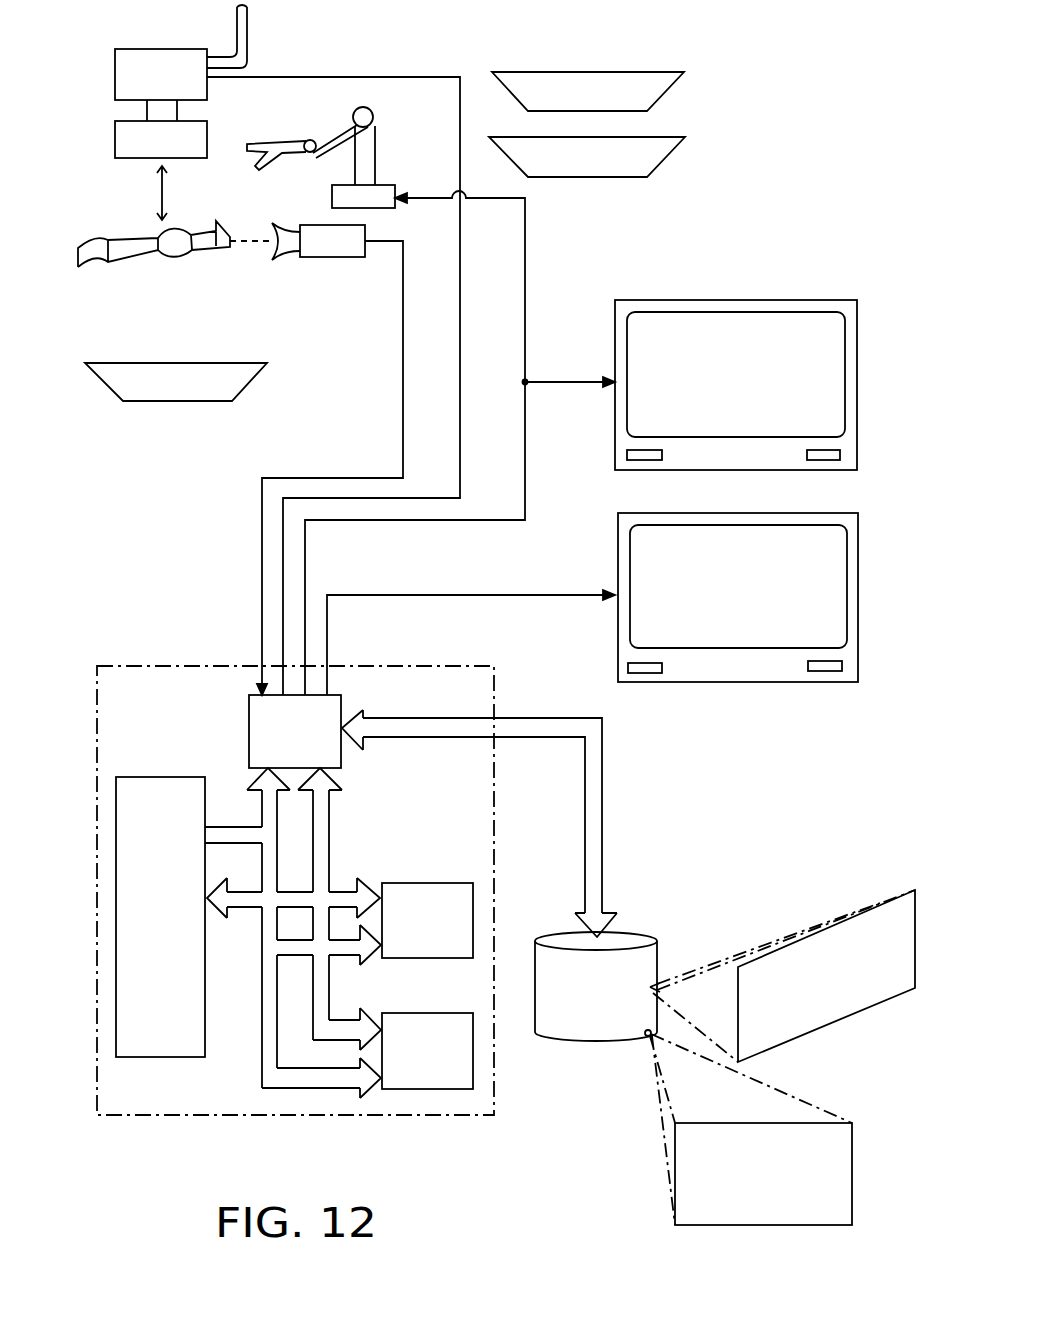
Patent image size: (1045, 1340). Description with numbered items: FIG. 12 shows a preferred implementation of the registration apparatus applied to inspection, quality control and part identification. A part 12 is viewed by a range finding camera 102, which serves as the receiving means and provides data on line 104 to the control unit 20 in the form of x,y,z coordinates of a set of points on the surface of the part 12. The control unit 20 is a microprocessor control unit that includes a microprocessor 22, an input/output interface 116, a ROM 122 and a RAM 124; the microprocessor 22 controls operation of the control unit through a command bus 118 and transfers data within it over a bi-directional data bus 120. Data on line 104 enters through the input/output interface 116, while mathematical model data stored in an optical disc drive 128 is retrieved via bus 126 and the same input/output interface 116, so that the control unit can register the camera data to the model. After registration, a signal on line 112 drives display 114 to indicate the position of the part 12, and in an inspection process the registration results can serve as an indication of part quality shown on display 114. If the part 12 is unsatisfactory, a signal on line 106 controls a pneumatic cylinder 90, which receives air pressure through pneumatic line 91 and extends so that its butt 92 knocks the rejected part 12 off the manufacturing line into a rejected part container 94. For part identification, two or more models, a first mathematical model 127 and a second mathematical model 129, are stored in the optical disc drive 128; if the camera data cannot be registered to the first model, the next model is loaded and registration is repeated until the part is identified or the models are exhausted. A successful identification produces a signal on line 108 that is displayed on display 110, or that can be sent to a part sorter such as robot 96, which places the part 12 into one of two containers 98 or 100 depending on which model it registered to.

The part 12 is at (133, 255).
The control unit 20 is at (257, 1115).
The microprocessor 22 is at (148, 1043).
The pneumatic cylinder 90 is at (153, 57).
The pneumatic line 91 is at (245, 37).
The butt 92 is at (120, 140).
The rejected part container 94 is at (201, 392).
The robot 96 is at (370, 160).
The container 98 is at (657, 87).
The container 100 is at (635, 162).
The range finding camera 102 is at (341, 251).
The line 104 is at (403, 316).
The line 106 is at (388, 75).
The line 108 is at (525, 482).
The display 110 is at (730, 303).
The line 112 is at (405, 595).
The display 114 is at (788, 670).
The input/output interface 116 is at (253, 717).
The command bus 118 is at (233, 835).
The bi-directional data bus 120 is at (252, 905).
The ROM 122 is at (407, 893).
The RAM 124 is at (430, 1077).
The bus 126 is at (597, 800).
The first mathematical model 127 is at (793, 1042).
The optical disc drive 128 is at (650, 962).
The second mathematical model 129 is at (852, 1183).